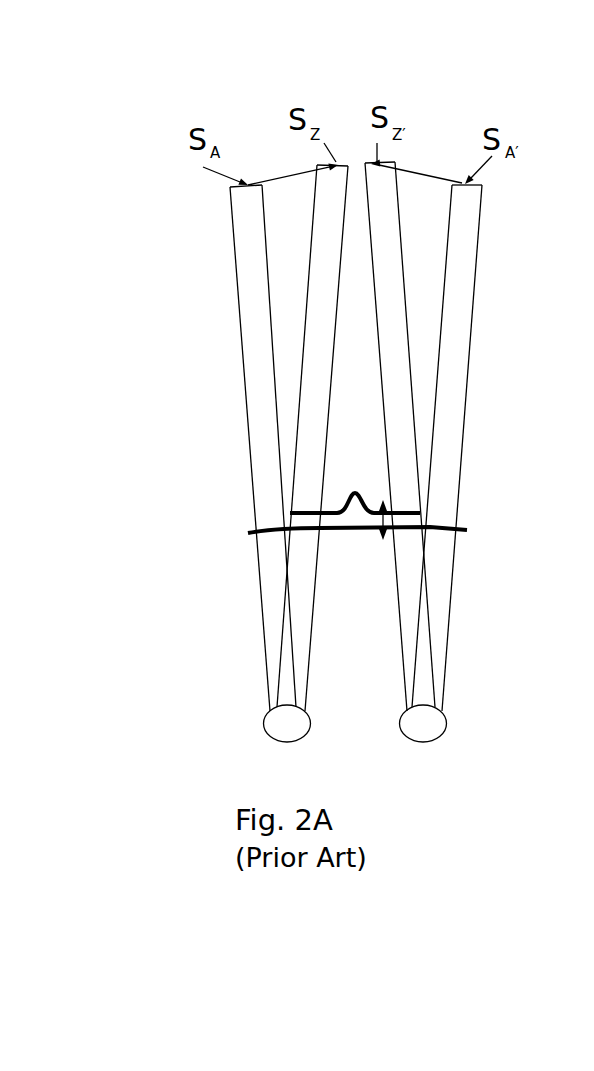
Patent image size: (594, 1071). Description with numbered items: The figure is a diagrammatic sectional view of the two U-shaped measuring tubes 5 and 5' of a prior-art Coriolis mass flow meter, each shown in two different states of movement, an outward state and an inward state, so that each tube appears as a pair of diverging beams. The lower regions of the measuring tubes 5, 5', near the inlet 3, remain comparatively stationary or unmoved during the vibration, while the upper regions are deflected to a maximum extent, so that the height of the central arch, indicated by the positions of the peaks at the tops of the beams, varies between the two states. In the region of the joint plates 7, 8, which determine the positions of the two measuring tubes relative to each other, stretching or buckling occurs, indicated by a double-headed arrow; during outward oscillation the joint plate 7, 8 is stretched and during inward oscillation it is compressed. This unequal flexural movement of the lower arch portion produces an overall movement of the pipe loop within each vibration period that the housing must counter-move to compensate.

The inlet 3 is at (295, 720).
The measuring tube 5 is at (255, 438).
The measuring tube 5' is at (459, 436).
The joint plate 7 is at (248, 533).
The joint plate 8 is at (290, 513).